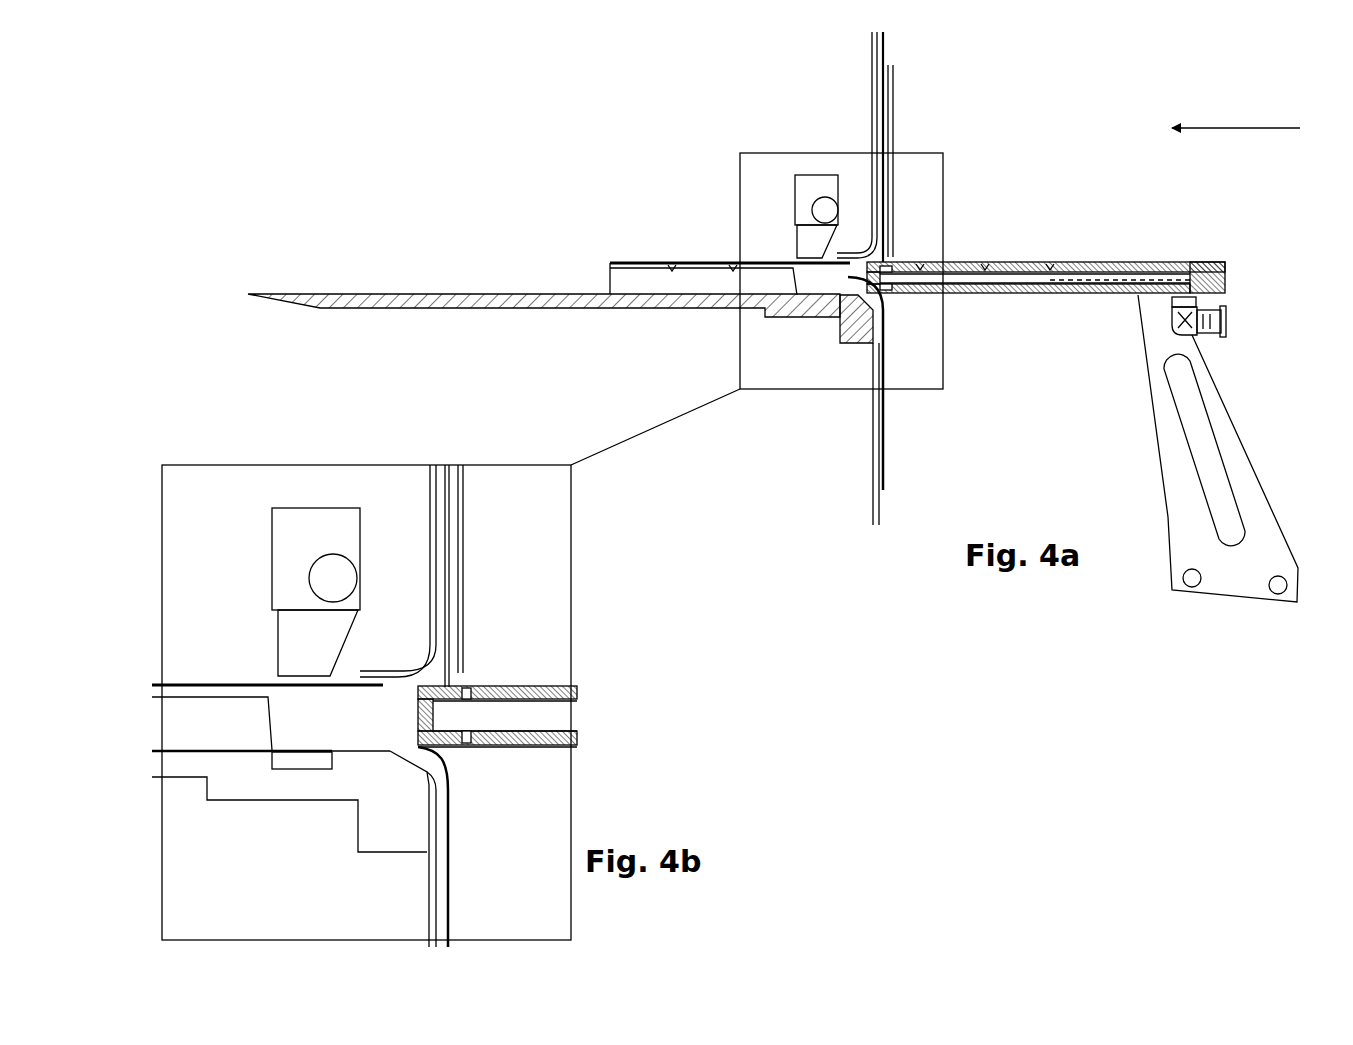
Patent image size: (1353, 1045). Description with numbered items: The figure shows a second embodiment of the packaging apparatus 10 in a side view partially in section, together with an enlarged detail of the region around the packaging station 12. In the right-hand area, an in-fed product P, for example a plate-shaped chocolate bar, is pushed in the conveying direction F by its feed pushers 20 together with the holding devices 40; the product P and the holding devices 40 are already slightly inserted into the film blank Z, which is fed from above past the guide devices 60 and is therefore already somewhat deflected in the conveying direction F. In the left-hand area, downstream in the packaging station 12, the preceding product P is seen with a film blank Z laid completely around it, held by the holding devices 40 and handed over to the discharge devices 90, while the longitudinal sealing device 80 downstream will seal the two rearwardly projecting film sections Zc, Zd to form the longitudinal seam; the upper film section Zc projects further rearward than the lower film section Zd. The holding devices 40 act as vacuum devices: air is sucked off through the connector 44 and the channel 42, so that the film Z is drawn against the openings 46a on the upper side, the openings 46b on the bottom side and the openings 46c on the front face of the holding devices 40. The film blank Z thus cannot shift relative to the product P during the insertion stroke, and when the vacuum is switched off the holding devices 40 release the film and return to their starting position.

In FIG. 4A, the apparatus 10 is at (1132, 84).
In FIG. 4A, the packaging station 12 is at (916, 215).
In FIG. 4A, the feed pushers 20 is at (1222, 412).
In FIG. 4A, the holding devices 40 is at (1225, 272).
In FIG. 4B, the holding devices 40 is at (540, 738).
In FIG. 4A, the channel 42 is at (1125, 275).
In FIG. 4B, the channel 42 is at (485, 715).
In FIG. 4A, the connector 44 is at (1228, 320).
In FIG. 4A, the openings 46a is at (872, 268).
In FIG. 4B, the openings 46a is at (468, 688).
In FIG. 4A, the openings 46b is at (877, 295).
In FIG. 4B, the openings 46b is at (467, 742).
In FIG. 4A, the openings 46c is at (840, 343).
In FIG. 4B, the openings 46c is at (417, 713).
In FIG. 4A, the guide devices 60 is at (872, 70).
In FIG. 4B, the guide devices 60 is at (430, 500).
In FIG. 4A, the longitudinal sealing device 80 is at (805, 190).
In FIG. 4B, the longitudinal sealing device 80 is at (291, 520).
In FIG. 4A, the discharge devices 90 is at (510, 295).
In FIG. 4A, the product P is at (707, 283).
In FIG. 4B, the product P is at (205, 724).
In FIG. 4A, the film blank Z is at (883, 40).
In FIG. 4B, the film blank Z is at (447, 465).
In FIG. 4A, the film section Zc is at (860, 276).
In FIG. 4B, the film section Zc is at (368, 687).
In FIG. 4A, the film section Zd is at (838, 267).
In FIG. 4B, the film section Zd is at (307, 752).
In FIG. 4A, the conveying direction F is at (1236, 112).